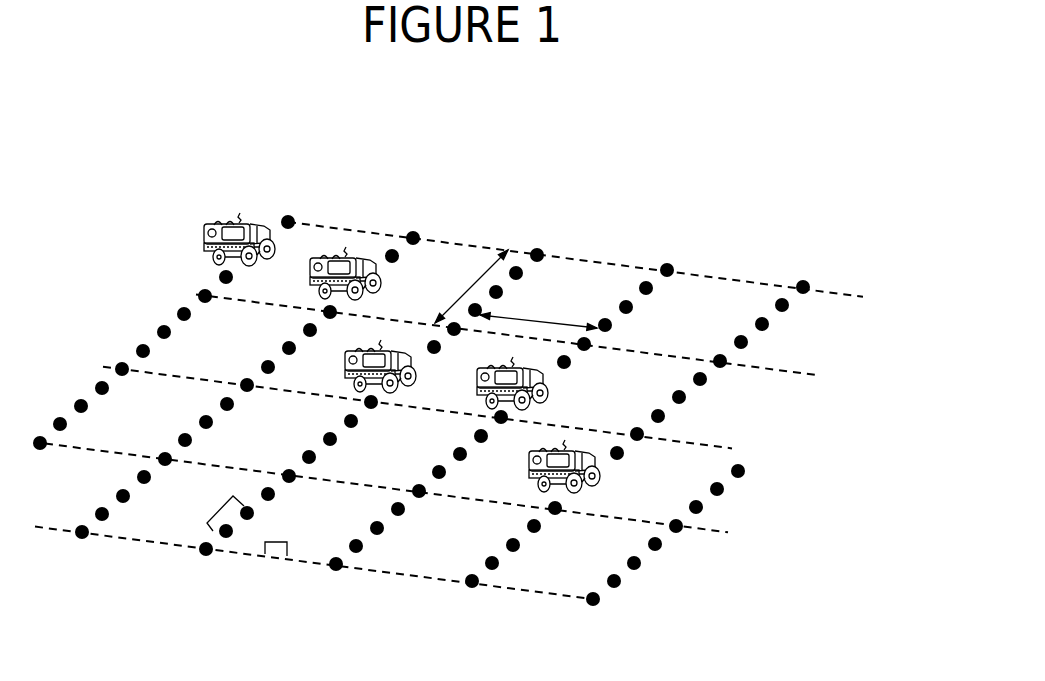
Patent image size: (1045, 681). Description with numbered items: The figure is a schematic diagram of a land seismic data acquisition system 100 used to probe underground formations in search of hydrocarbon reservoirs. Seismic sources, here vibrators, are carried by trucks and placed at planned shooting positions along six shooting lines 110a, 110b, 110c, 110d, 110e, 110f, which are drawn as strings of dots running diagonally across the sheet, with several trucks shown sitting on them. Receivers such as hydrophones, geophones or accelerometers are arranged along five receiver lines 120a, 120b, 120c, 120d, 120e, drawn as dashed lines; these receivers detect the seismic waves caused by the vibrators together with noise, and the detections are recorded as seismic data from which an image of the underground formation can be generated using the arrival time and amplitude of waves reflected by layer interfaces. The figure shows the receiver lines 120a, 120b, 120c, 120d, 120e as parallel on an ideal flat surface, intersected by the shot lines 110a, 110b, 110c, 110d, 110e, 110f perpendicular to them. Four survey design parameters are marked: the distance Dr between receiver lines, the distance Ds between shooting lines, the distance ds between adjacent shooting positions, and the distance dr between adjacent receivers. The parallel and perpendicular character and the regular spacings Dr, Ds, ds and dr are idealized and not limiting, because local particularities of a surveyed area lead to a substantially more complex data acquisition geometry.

The land seismic data acquisition system 100 is at (442, 110).
The shooting line 110a is at (293, 214).
The shooting line 110b is at (107, 534).
The shooting line 110c is at (230, 551).
The shooting line 110d is at (362, 553).
The shooting line 110e is at (517, 553).
The shooting line 110f is at (634, 571).
The receiver line 120a is at (845, 293).
The receiver line 120b is at (795, 371).
The receiver line 120c is at (708, 446).
The receiver line 120d is at (700, 528).
The receiver line 120e is at (53, 531).
The distance between receiver lines Dr is at (471, 286).
The distance between shooting lines Ds is at (538, 313).
The distance between adjacent receivers dr is at (281, 537).
The distance between adjacent shooting positions ds is at (220, 510).